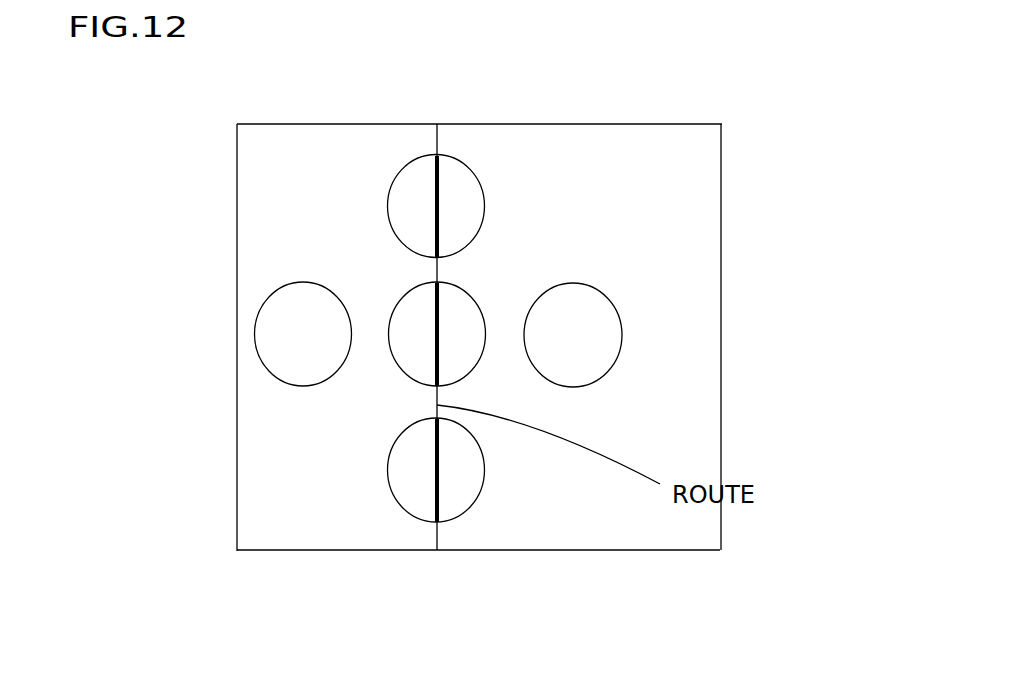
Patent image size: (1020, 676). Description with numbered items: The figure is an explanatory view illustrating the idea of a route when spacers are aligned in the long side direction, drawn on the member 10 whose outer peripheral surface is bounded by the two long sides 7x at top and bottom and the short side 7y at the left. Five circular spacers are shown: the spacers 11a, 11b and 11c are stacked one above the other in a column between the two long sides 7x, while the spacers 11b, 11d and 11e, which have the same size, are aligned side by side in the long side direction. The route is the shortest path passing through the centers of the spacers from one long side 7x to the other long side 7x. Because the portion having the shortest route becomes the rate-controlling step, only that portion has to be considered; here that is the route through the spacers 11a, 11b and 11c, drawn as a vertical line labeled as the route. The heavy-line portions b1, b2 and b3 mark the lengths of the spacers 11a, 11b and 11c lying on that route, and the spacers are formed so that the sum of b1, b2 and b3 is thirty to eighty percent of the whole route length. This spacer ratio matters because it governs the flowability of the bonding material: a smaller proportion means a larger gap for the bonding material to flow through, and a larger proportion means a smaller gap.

The wiring board / substrate 10 is at (470, 334).
The long side 7x is at (499, 124).
The short side 7y is at (237, 353).
The spacer 11a is at (408, 188).
The spacer 11b is at (452, 347).
The spacer 11c is at (468, 478).
The spacer 11d is at (310, 360).
The spacer 11e is at (594, 338).
The heavy-line portion b1 is at (439, 195).
The heavy-line portion b2 is at (439, 303).
The heavy-line portion b3 is at (437, 483).